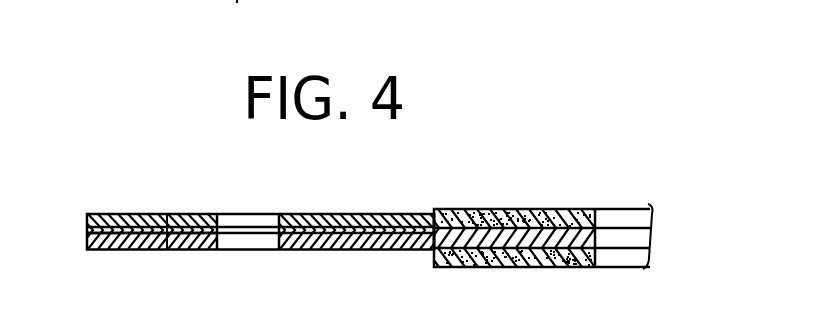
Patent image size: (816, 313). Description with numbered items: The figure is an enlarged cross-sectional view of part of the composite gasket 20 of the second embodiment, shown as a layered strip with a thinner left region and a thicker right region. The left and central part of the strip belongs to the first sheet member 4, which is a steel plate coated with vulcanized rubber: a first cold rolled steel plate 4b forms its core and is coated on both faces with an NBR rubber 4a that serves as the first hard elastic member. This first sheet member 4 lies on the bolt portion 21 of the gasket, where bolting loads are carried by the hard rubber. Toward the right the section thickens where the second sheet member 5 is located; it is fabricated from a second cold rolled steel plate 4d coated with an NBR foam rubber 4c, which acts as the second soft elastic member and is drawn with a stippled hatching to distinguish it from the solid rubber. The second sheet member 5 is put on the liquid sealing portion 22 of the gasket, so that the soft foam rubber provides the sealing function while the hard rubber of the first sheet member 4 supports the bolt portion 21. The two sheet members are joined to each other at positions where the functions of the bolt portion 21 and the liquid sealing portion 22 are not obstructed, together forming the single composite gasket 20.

The first sheet member 4 is at (297, 214).
The NBR rubber 4a is at (162, 182).
The first cold rolled steel plate 4b is at (118, 214).
The NBR foam rubber 4c is at (462, 209).
The second cold rolled steel plate 4d is at (521, 262).
The second sheet member 5 is at (509, 209).
The composite gasket 20 is at (643, 177).
The bolt portion 21 is at (192, 243).
The liquid sealing portion 22 is at (553, 209).